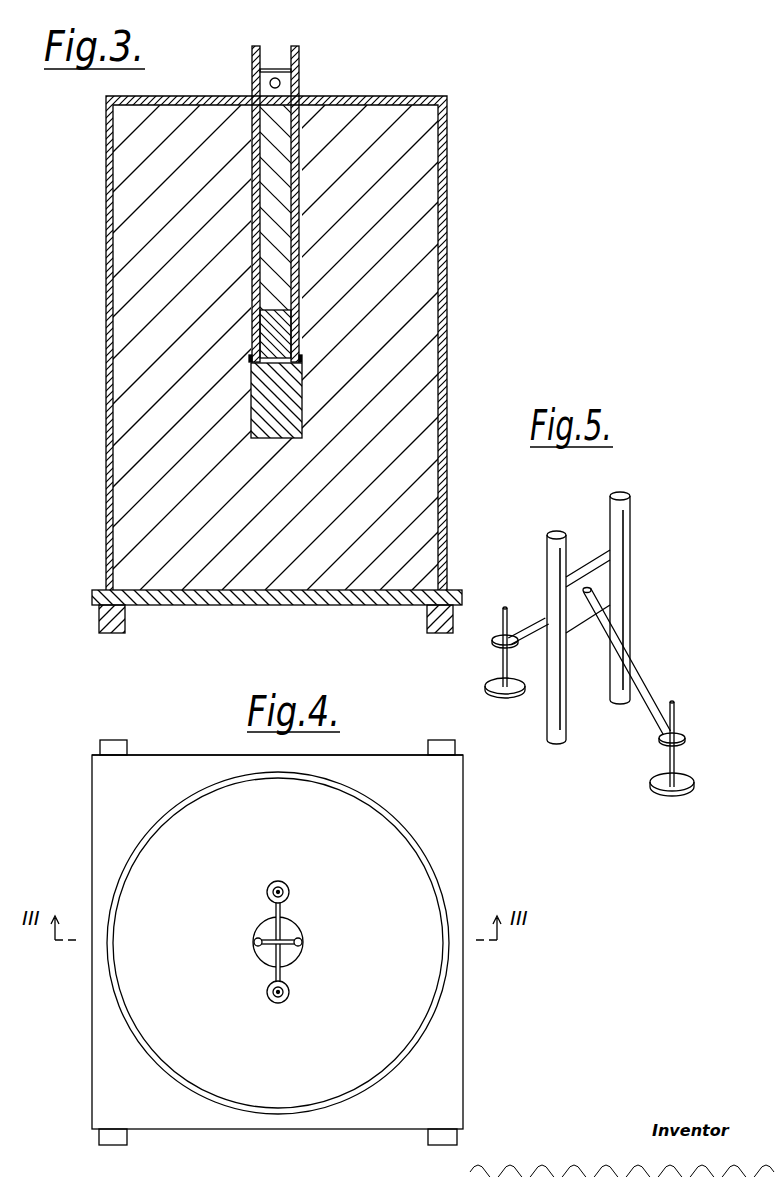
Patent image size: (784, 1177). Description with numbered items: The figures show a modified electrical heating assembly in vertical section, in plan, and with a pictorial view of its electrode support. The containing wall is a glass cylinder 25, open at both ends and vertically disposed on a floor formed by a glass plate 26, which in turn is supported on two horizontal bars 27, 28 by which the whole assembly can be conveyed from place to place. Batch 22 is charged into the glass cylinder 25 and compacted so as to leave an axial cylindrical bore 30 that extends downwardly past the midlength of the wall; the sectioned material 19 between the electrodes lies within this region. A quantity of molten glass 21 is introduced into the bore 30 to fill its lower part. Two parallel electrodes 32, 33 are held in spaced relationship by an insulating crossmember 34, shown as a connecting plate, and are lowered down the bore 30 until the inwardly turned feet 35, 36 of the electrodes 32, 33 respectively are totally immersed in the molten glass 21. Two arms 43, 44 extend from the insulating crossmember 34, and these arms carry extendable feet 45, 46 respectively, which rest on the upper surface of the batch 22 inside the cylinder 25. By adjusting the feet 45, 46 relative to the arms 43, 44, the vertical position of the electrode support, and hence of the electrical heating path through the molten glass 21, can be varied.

In FIG. 3, the filling / interior material between tubes 19 is at (272, 130).
In FIG. 4, the filling / interior material between tubes 19 is at (292, 953).
In FIG. 3, the molten glass 21 is at (277, 415).
In FIG. 3, the batch 22 is at (402, 304).
In FIG. 4, the batch 22 is at (440, 1070).
In FIG. 3, the glass cylinder 25 is at (106, 267).
In FIG. 4, the glass cylinder 25 is at (432, 866).
In FIG. 3, the glass plate 26 is at (290, 606).
In FIG. 4, the glass plate 26 is at (183, 760).
In FIG. 3, the horizontal bar 27 is at (114, 634).
In FIG. 4, the horizontal bar 27 is at (112, 746).
In FIG. 3, the horizontal bar 28 is at (439, 634).
In FIG. 4, the horizontal bar 28 is at (432, 746).
In FIG. 3, the cylindrical bore 30 is at (303, 198).
In FIG. 3, the electrode 32 is at (254, 70).
In FIG. 4, the electrode 32 is at (256, 938).
In FIG. 5, the electrode 32 is at (550, 556).
In FIG. 3, the electrode 33 is at (299, 80).
In FIG. 4, the electrode 33 is at (302, 941).
In FIG. 5, the electrode 33 is at (623, 495).
In FIG. 3, the insulating crossmember 34 is at (272, 68).
In FIG. 4, the insulating crossmember 34 is at (266, 948).
In FIG. 5, the insulating crossmember 34 is at (576, 580).
In FIG. 3, the inwardly turned foot 35 is at (260, 358).
In FIG. 3, the inwardly turned foot 36 is at (291, 358).
In FIG. 4, the arm 43 is at (288, 906).
In FIG. 5, the arm 43 is at (537, 622).
In FIG. 4, the arm 44 is at (284, 975).
In FIG. 5, the arm 44 is at (640, 690).
In FIG. 4, the extendable foot 45 is at (273, 883).
In FIG. 5, the extendable foot 45 is at (503, 662).
In FIG. 4, the extendable foot 46 is at (272, 1001).
In FIG. 5, the extendable foot 46 is at (665, 757).